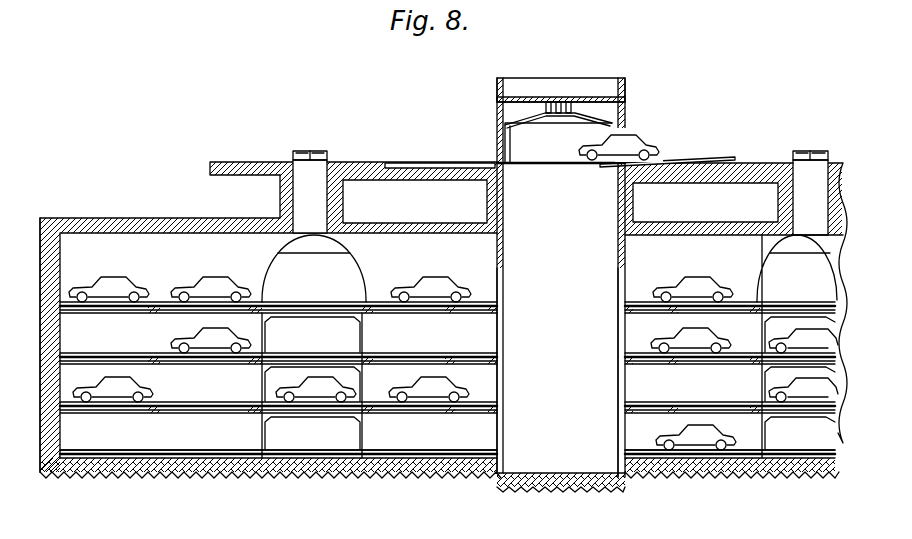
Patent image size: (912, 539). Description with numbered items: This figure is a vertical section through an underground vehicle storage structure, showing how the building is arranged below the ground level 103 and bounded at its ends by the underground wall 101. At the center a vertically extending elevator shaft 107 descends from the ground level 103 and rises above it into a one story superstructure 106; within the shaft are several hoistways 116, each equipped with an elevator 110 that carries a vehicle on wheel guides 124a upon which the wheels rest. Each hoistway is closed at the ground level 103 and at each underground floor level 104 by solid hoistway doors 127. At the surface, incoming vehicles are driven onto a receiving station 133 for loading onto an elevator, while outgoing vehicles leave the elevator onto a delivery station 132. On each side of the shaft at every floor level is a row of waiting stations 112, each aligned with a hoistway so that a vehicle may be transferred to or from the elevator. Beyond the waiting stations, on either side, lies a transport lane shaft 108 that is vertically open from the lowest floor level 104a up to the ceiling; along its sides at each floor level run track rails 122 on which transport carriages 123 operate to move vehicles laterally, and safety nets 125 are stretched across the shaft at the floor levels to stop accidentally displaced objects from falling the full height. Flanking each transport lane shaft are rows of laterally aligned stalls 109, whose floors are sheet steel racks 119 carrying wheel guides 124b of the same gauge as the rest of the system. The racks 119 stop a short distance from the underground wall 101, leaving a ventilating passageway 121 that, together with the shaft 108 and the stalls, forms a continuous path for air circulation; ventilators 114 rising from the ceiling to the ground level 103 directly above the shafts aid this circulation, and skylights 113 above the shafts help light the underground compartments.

The underground wall 101 is at (45, 253).
The ground level 103 is at (750, 163).
The underground floor level 104 is at (500, 268).
The floor level 104a is at (208, 453).
The one story superstructure 106 is at (625, 100).
The elevator shaft 107 is at (562, 214).
The transport lane shaft 108 is at (293, 274).
The stall 109 is at (148, 273).
The elevator 110 is at (520, 118).
The waiting station 112 is at (418, 266).
The skylight 113 is at (313, 150).
The ventilator 114 is at (290, 190).
The hoistway 116 is at (527, 433).
The sheet steel rack 119 is at (640, 294).
The ventilating passageway 121 is at (70, 293).
The track rail 122 is at (292, 262).
The transport carriage 123 is at (778, 306).
The wheel guide 124a is at (547, 163).
The wheel guide 124b is at (115, 462).
The safety net 125 is at (824, 316).
The hoistway door 127 is at (497, 141).
The delivery station 132 is at (412, 162).
The receiving station 133 is at (686, 157).